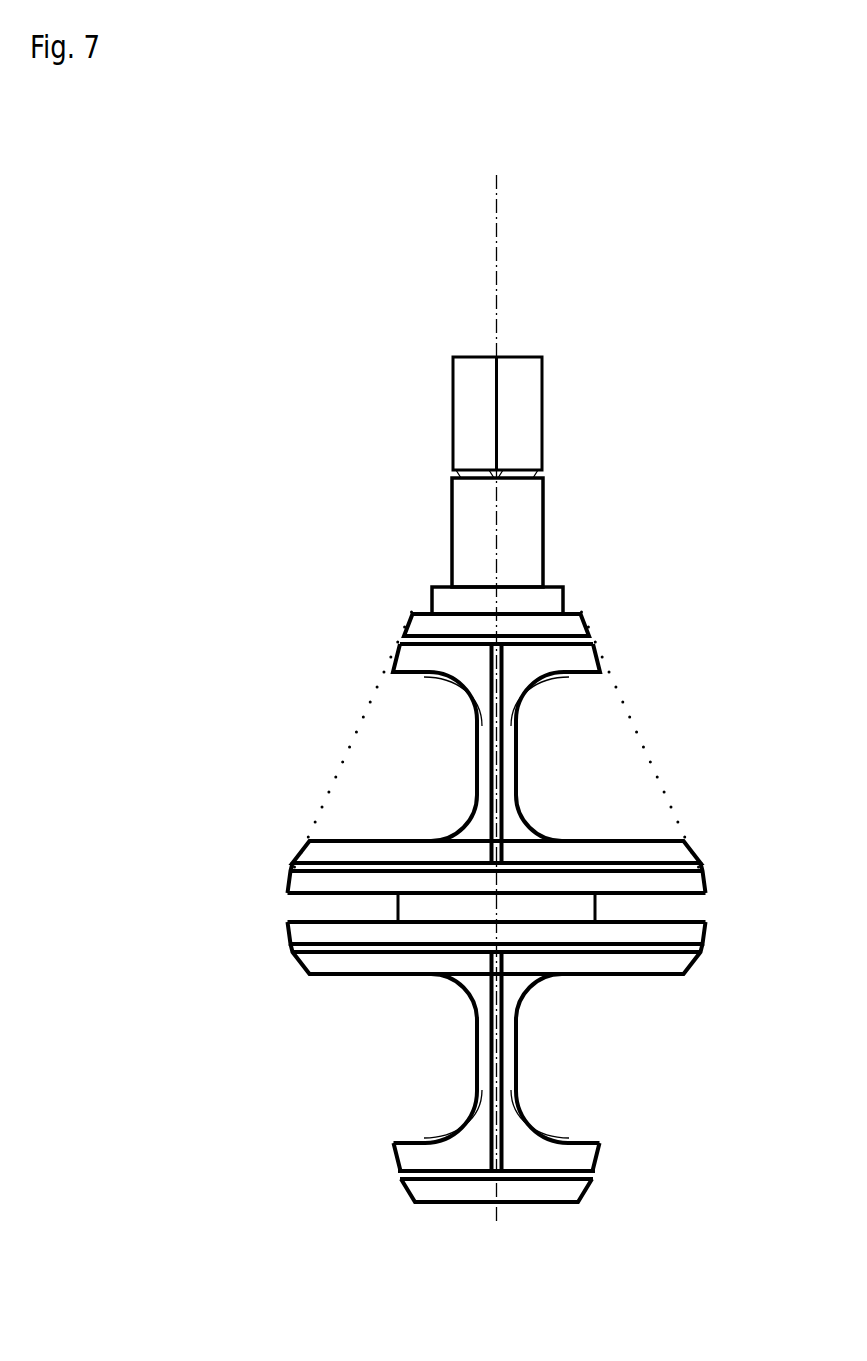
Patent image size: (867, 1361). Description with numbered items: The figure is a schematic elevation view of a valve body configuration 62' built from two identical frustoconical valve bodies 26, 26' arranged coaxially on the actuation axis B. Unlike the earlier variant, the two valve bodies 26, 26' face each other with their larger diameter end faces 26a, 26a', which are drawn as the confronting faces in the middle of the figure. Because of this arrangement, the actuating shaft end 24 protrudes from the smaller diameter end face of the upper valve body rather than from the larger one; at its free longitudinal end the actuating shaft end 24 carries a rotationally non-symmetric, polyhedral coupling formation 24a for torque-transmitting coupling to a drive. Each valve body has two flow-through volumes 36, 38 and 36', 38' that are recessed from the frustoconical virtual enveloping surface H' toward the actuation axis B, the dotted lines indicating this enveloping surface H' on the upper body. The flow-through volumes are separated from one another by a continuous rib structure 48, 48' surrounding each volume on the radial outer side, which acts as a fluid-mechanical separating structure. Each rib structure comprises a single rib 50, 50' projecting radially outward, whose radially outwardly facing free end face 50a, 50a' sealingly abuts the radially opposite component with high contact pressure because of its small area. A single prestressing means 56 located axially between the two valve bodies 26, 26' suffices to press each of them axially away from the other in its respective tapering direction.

The actuation axis B is at (497, 190).
The actuating shaft end 24 is at (463, 541).
The coupling formation 24a is at (478, 417).
The valve body 26 is at (440, 1055).
The valve body 26' is at (449, 745).
The end face 26a is at (449, 928).
The end face 26a' is at (447, 884).
The flow-through volume 36 is at (297, 1074).
The flow-through volume 36' is at (302, 748).
The flow-through volume 38 is at (664, 1081).
The flow-through volume 38' is at (677, 779).
The rib structure 48 is at (586, 1076).
The rib structure 48' is at (538, 725).
The rib 50 is at (449, 950).
The rib 50' is at (491, 863).
The free end face 50a is at (537, 1172).
The free end face 50a' is at (542, 875).
The prestressing means 56 is at (565, 913).
The valve body configuration 62' is at (426, 894).
The virtual enveloping surface H' is at (496, 740).